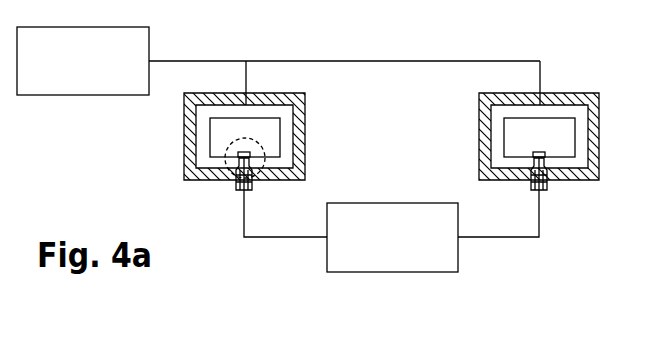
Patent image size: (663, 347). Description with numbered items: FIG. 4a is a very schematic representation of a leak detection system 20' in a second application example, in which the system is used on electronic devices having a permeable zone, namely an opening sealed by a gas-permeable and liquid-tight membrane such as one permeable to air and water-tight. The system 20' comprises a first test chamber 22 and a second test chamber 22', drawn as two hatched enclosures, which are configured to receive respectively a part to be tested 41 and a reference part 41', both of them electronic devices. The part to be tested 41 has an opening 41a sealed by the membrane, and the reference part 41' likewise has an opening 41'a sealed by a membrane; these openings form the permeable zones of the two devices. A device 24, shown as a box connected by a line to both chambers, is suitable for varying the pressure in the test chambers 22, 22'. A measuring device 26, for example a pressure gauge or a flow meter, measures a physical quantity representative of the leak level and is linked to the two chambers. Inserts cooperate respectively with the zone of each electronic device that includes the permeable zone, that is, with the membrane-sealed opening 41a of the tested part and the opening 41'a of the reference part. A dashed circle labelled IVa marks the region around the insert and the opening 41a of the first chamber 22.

The leak detection system 20' is at (344, 40).
The first test chamber 22 is at (202, 136).
The second test chamber 22' is at (539, 110).
The device for varying the pressure 24 is at (44, 96).
The measuring device 26 is at (327, 253).
The electronic device (part to be tested) 41 is at (278, 112).
The opening 41a is at (256, 144).
The electronic device (reference part) 41' is at (505, 141).
The opening 41'a is at (483, 135).
The detail view IVa is at (224, 152).